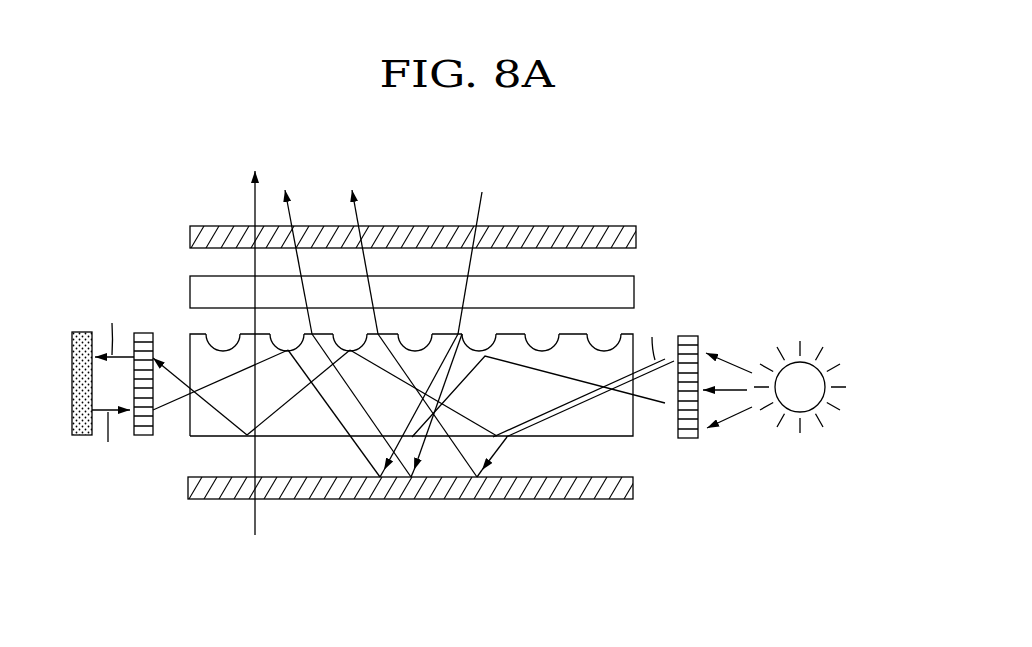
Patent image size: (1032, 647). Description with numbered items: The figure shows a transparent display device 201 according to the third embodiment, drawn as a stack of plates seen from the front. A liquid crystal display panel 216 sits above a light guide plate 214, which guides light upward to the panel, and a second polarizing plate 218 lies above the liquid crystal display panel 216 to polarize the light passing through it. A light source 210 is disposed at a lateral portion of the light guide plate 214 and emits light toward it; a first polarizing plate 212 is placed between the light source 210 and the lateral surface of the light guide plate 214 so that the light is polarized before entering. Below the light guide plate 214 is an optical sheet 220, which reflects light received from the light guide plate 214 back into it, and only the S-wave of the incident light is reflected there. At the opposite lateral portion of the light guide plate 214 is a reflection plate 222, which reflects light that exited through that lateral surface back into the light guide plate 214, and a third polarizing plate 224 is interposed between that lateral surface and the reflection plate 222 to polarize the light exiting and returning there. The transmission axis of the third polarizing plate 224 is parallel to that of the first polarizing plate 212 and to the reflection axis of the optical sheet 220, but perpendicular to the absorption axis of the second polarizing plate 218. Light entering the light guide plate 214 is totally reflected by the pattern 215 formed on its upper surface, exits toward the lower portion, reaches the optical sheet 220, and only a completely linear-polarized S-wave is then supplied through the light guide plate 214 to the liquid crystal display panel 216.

The transparent display device 201 is at (634, 176).
The light source 210 is at (815, 382).
The first polarizing plate 212 is at (687, 440).
The light guide plate 214 is at (202, 413).
The pattern 215 is at (218, 347).
The liquid crystal display panel 216 is at (634, 297).
The second polarizing plate 218 is at (634, 238).
The optical sheet 220 is at (589, 490).
The reflection plate 222 is at (80, 333).
The third polarizing plate 224 is at (142, 333).